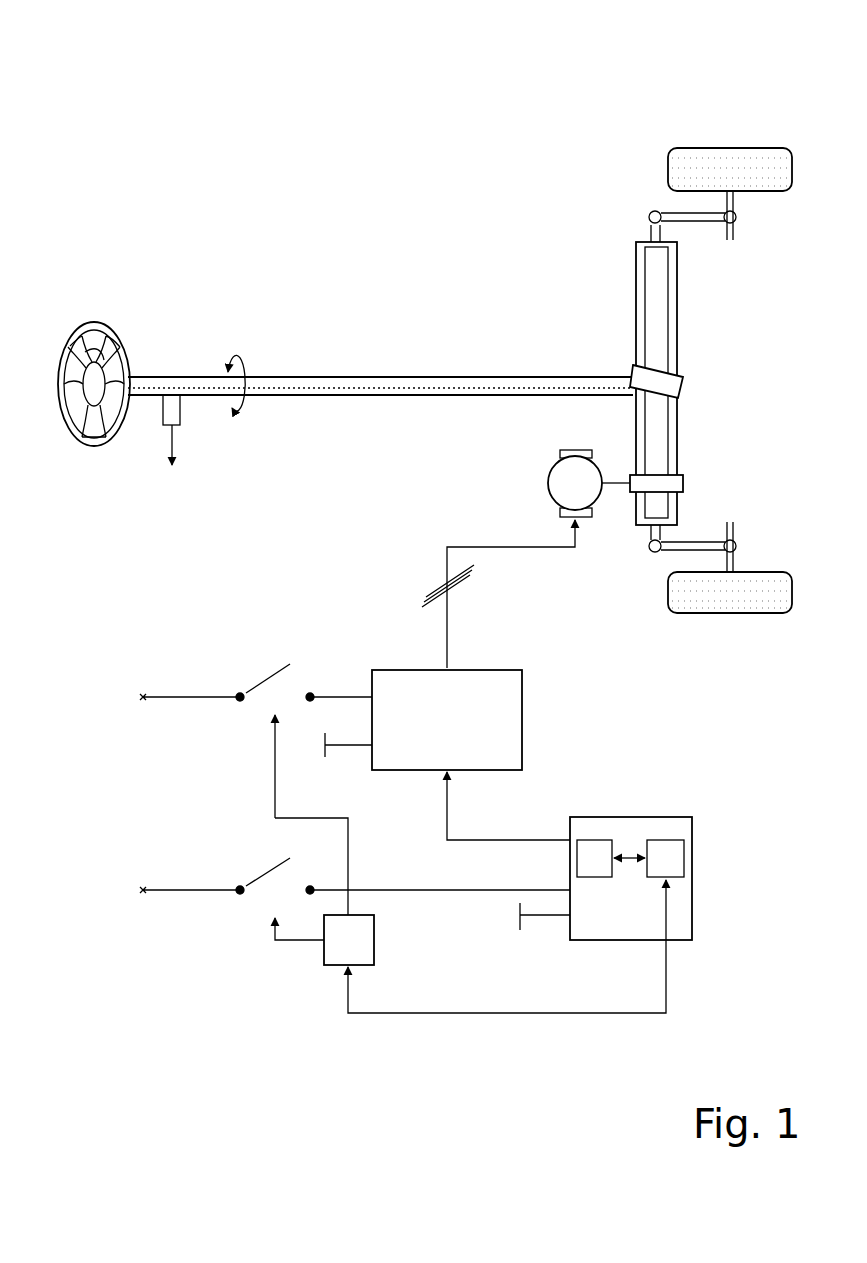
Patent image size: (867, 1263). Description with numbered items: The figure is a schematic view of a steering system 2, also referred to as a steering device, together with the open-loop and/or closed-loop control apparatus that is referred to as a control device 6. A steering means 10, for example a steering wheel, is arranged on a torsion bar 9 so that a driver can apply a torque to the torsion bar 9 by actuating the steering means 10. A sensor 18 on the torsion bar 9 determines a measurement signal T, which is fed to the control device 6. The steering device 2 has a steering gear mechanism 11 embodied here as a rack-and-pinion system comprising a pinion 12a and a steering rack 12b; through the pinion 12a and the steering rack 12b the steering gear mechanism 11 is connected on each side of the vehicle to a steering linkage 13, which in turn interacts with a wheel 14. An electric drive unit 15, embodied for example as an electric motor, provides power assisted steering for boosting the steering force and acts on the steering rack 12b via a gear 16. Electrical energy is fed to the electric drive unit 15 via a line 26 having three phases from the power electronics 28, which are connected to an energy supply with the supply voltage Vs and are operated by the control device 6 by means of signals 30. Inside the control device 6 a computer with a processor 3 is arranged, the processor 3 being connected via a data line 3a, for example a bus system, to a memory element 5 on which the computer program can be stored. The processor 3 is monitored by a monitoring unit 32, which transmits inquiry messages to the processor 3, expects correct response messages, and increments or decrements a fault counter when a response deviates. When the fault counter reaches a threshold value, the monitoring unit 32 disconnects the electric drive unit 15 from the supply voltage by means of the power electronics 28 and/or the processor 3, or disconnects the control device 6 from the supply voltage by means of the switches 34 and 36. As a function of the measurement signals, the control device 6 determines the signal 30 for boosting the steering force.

The steering system 2 is at (428, 255).
The processor 3 is at (690, 856).
The data line 3a is at (630, 855).
The memory element 5 is at (607, 877).
The control device 6 is at (693, 922).
The torsion bar 9 is at (268, 378).
The steering means 10 is at (110, 335).
The steering gear mechanism 11 is at (612, 330).
The pinion 12a is at (633, 372).
The steering rack 12b is at (663, 340).
The steering linkage 13 is at (650, 213).
The wheel 14 is at (726, 148).
The electric drive unit 15 is at (550, 472).
The gear 16 is at (684, 470).
The sensor 18 is at (173, 412).
The line 26 is at (447, 645).
The power electronics 28 is at (523, 707).
The signals 30 is at (452, 822).
The monitoring unit 32 is at (374, 950).
The switch 34 is at (248, 656).
The switch 36 is at (248, 852).